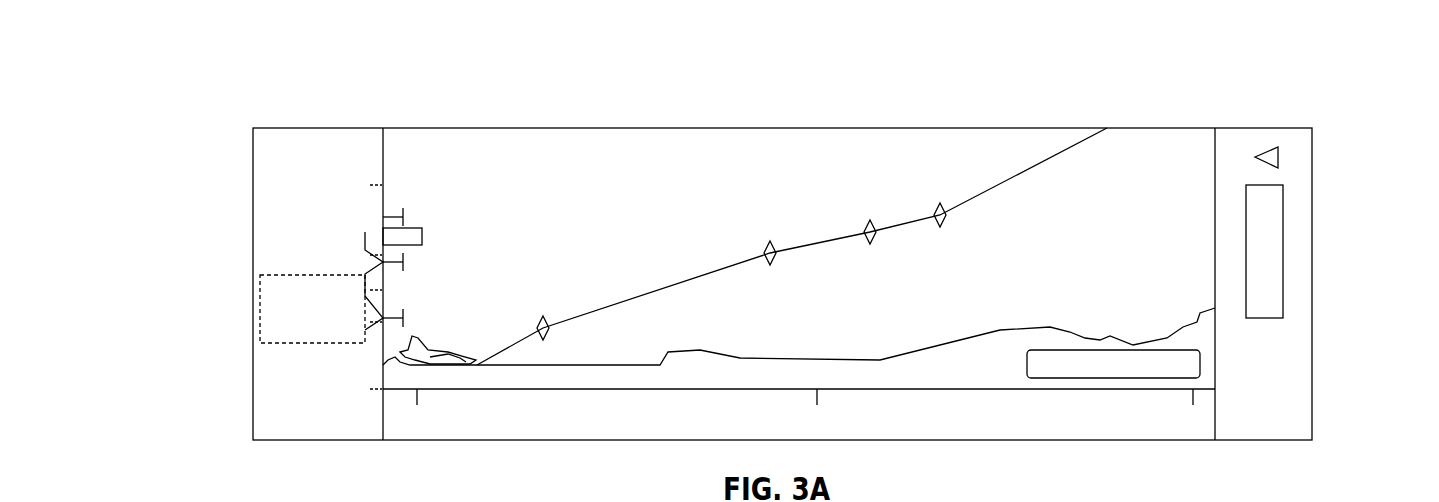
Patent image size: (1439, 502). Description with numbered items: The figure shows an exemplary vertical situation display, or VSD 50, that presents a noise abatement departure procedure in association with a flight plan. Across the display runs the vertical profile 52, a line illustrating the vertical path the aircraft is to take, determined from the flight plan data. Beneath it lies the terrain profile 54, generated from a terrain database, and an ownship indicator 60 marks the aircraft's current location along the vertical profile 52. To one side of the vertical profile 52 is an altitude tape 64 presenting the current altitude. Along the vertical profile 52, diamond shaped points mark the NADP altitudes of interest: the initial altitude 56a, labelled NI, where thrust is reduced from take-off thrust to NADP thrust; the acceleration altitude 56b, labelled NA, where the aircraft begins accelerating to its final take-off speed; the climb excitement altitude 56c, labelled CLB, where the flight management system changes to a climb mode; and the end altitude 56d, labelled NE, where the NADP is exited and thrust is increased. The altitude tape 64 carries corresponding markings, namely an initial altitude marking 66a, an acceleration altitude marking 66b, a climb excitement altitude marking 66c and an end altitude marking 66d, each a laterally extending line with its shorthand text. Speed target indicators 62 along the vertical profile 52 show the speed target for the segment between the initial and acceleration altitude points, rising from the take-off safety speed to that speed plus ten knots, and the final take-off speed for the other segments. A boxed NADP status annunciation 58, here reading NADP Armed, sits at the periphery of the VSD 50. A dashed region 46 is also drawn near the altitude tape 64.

The vertical situation display (VSD) 50 is at (1209, 65).
The vertical profile 52 is at (710, 273).
The terrain profile 54 is at (1202, 335).
The initial altitude 56a is at (543, 316).
The acceleration altitude 56b is at (770, 241).
The climb excitement altitude 56c is at (870, 220).
The end altitude 56d is at (940, 203).
The NADP status annunciation 58 is at (1200, 368).
The ownship indicator 60 is at (410, 346).
The speed target indicator 62 is at (653, 267).
The altitude tape 64 is at (318, 160).
The initial altitude marking 66a is at (365, 318).
The acceleration altitude marking 66b is at (365, 262).
The climb excitement altitude marking 66c is at (383, 236).
The end altitude marking 66d is at (383, 213).
The altitude region indicator 46 is at (321, 287).